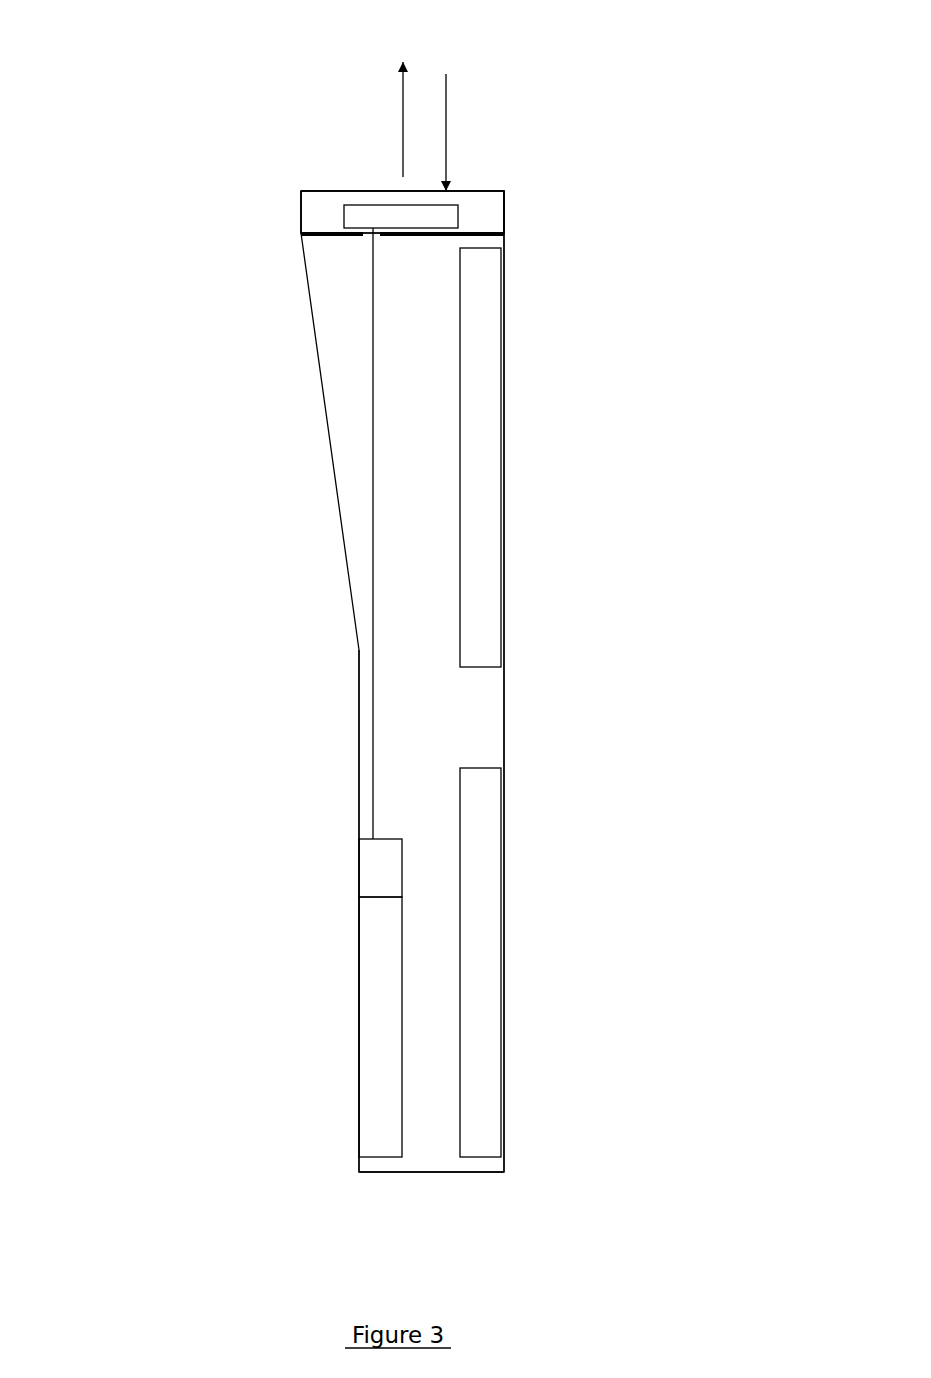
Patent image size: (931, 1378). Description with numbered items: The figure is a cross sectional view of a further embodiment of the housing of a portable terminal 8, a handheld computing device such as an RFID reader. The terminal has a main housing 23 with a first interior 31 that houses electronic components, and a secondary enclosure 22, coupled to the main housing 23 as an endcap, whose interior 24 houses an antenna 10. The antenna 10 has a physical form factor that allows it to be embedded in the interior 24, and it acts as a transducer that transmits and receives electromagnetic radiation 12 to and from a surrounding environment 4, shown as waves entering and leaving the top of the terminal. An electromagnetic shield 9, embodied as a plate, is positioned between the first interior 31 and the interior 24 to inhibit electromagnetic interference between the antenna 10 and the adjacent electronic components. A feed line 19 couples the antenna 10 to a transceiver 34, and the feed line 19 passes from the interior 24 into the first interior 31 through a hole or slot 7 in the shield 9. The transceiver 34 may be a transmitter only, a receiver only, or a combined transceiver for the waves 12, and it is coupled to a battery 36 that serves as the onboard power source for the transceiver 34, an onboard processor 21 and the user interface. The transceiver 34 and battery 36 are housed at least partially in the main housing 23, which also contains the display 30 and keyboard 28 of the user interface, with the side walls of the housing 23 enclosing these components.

The surrounding environment 4 is at (314, 37).
The hole/slot 7 is at (366, 242).
The portable terminal 8 is at (243, 564).
The EM shield 9 is at (328, 235).
The antenna 10 is at (432, 220).
The electromagnetic radiation 12 is at (432, 148).
The feed line 19 is at (373, 740).
The onboard processor 21 is at (533, 252).
The secondary enclosure 22 is at (302, 205).
The main housing 23 is at (445, 1172).
The interior of secondary enclosure 24 is at (490, 207).
The keyboard 28 is at (488, 955).
The display 30 is at (488, 479).
The first interior 31 is at (433, 710).
The transceiver 34 is at (373, 868).
The battery 36 is at (375, 1055).